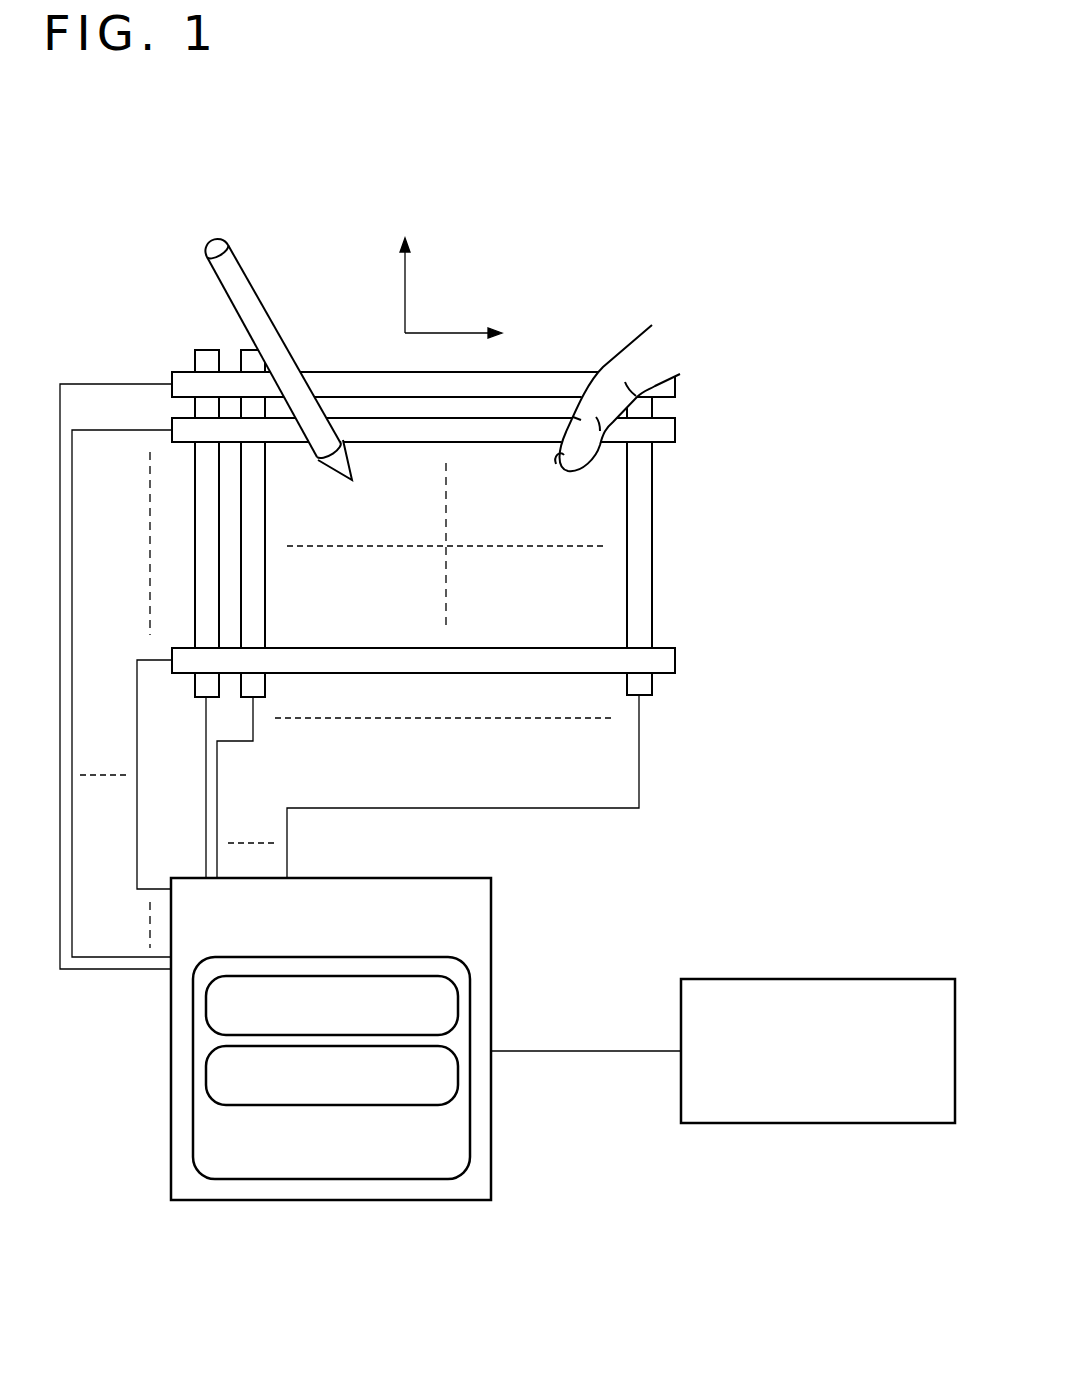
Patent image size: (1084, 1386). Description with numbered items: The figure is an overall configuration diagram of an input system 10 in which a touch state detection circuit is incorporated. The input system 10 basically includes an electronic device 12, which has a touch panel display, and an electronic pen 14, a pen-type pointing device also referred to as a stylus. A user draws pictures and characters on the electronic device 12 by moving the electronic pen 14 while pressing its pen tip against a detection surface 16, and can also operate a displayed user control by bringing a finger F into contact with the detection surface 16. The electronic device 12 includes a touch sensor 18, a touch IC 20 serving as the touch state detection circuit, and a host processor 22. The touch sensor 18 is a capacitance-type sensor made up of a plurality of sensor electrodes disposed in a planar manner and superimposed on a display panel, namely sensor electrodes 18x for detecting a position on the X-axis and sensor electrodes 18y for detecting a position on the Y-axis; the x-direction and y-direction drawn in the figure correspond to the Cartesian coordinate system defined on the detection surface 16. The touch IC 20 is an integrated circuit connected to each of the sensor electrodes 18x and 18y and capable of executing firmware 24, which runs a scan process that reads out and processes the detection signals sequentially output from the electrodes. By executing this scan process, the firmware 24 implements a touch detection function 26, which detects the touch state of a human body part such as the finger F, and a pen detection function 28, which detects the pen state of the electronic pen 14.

The input system 10 is at (105, 146).
The electronic device 12 is at (103, 332).
The electronic pen 14 is at (242, 285).
The detection surface 16 is at (582, 571).
The touch sensor 18 is at (780, 403).
The sensor electrodes 18x is at (638, 475).
The sensor electrodes 18y is at (663, 429).
The touch IC 20 is at (332, 1200).
The host processor 22 is at (817, 979).
The firmware 24 is at (193, 1131).
The touch detection function 26 is at (205, 1008).
The pen detection function 28 is at (205, 1072).
The finger F is at (638, 352).